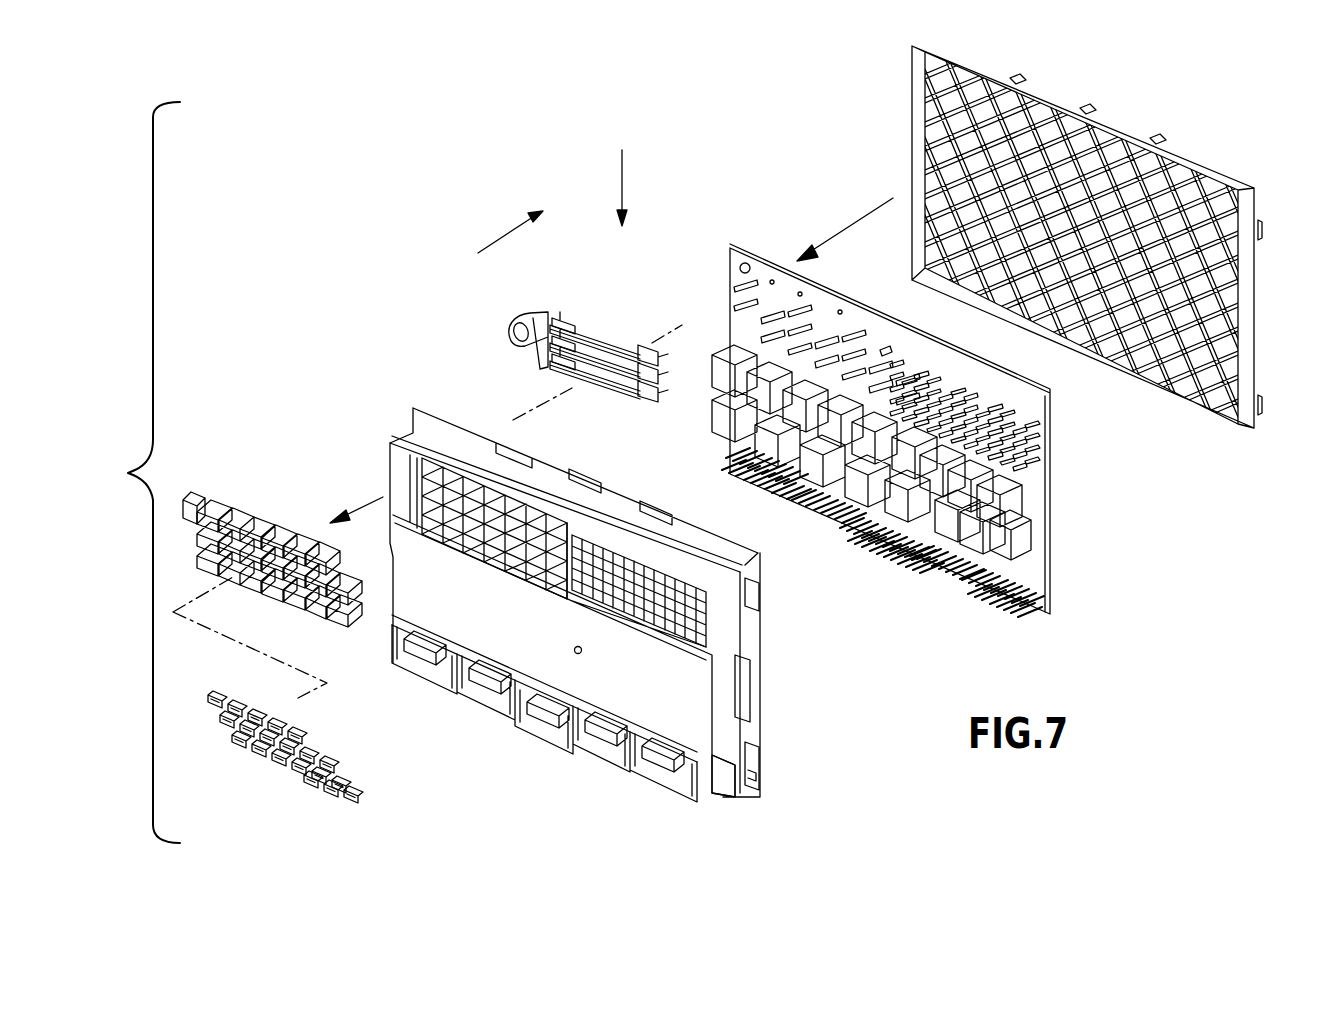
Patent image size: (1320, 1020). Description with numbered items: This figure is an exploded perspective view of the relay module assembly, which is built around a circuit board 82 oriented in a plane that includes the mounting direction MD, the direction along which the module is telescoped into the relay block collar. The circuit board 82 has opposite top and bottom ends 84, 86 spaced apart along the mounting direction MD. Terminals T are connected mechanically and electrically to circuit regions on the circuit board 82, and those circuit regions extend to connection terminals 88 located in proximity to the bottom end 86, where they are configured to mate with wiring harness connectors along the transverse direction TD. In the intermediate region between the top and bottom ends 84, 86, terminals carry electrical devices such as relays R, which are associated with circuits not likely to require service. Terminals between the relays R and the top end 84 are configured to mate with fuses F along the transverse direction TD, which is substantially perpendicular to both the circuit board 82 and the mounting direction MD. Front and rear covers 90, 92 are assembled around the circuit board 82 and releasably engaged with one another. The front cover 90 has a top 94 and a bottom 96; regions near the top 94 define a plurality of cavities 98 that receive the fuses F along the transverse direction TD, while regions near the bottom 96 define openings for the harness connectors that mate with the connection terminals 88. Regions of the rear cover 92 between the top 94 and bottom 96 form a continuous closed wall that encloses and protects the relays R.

The rear cover 92 is at (925, 128).
The top end 84 is at (836, 298).
The circuit board 82 is at (737, 272).
The terminals T is at (733, 296).
The relays R is at (1015, 535).
The connection terminals 88 is at (862, 522).
The bottom end 86 is at (980, 590).
The front cover 90 is at (428, 408).
The top 94 is at (447, 452).
The cavities 98 is at (420, 483).
The bottom 96 is at (728, 797).
The fuses F is at (218, 545).
The mounting direction MD is at (642, 188).
The transverse direction TD is at (507, 232).